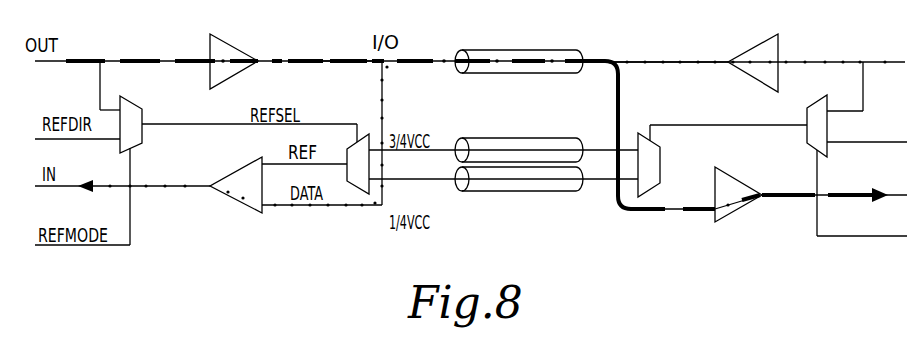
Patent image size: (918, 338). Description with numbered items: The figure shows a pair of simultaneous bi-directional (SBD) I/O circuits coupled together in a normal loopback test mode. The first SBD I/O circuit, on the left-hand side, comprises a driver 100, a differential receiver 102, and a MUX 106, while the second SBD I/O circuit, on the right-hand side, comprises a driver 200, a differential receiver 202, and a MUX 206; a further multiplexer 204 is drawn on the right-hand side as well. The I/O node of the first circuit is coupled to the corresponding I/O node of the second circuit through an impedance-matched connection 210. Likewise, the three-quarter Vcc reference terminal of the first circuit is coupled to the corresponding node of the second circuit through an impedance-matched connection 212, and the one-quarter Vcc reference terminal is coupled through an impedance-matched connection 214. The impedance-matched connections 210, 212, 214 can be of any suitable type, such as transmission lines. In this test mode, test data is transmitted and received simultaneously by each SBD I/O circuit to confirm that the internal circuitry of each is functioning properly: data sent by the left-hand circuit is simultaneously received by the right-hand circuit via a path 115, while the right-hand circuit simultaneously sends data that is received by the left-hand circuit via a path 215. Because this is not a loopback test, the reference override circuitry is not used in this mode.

The driver 100 is at (228, 36).
The differential receiver 102 is at (243, 197).
The MUX 106 is at (135, 108).
The path 115 is at (366, 58).
The driver 200 is at (762, 40).
The differential receiver 202 is at (728, 172).
The multiplexer 204 is at (645, 198).
The MUX 206 is at (818, 100).
The impedance-matched connection 210 is at (527, 50).
The impedance-matched connection 212 is at (522, 138).
The impedance-matched connection 214 is at (522, 192).
The path 215 is at (698, 62).